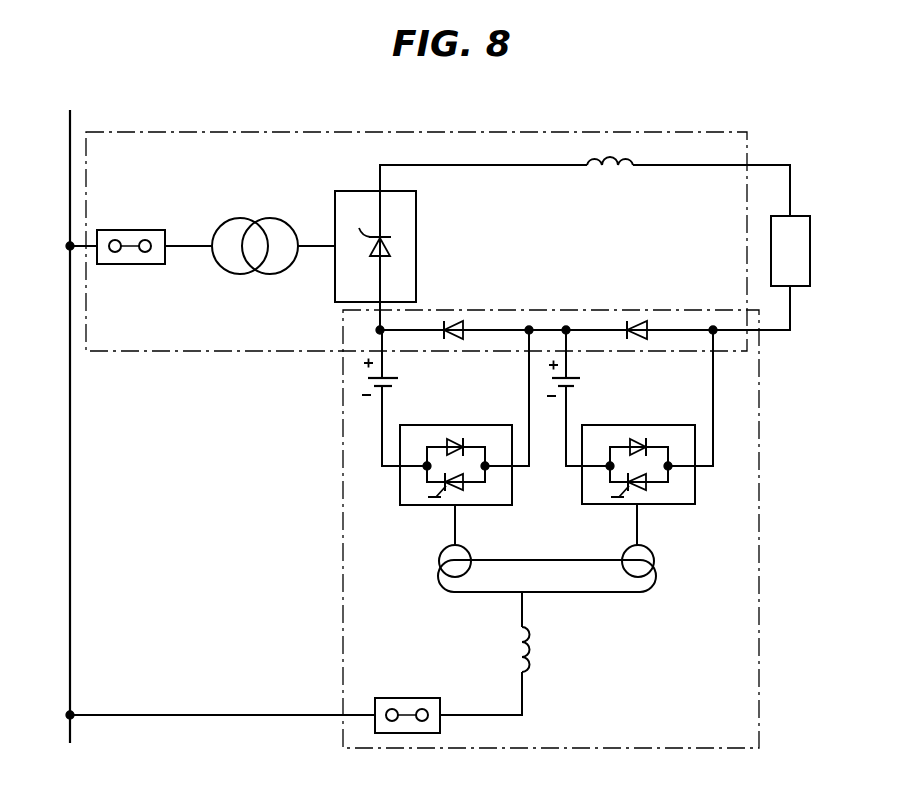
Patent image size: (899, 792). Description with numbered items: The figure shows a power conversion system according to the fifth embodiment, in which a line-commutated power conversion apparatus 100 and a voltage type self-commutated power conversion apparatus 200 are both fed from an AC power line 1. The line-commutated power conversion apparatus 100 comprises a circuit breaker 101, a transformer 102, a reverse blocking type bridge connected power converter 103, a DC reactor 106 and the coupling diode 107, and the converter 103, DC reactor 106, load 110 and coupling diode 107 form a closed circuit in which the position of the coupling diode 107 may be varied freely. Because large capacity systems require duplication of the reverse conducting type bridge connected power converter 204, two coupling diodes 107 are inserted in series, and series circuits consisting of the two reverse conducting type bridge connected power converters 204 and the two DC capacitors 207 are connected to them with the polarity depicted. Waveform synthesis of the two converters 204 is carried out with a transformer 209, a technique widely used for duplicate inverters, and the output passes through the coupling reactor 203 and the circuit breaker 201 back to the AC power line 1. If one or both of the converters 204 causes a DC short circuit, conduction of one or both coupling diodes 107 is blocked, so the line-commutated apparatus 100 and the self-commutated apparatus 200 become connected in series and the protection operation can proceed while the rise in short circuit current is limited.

The AC power line 1 is at (70, 488).
The line-commutated power conversion apparatus 100 is at (748, 143).
The circuit breaker 101 is at (127, 230).
The transformer 102 is at (268, 218).
The reverse blocking type bridge connected power converter 103 is at (416, 238).
The DC reactor 106 is at (608, 167).
The coupling diode 107 is at (452, 322).
The load 110 is at (800, 216).
The voltage type self-commutated power conversion apparatus 200 is at (790, 607).
The circuit breaker 201 is at (405, 698).
The coupling reactor 203 is at (536, 650).
The reverse conducting type bridge connected power converter 204 is at (483, 507).
The DC capacitor 207 is at (396, 378).
The transformer 209 is at (592, 593).